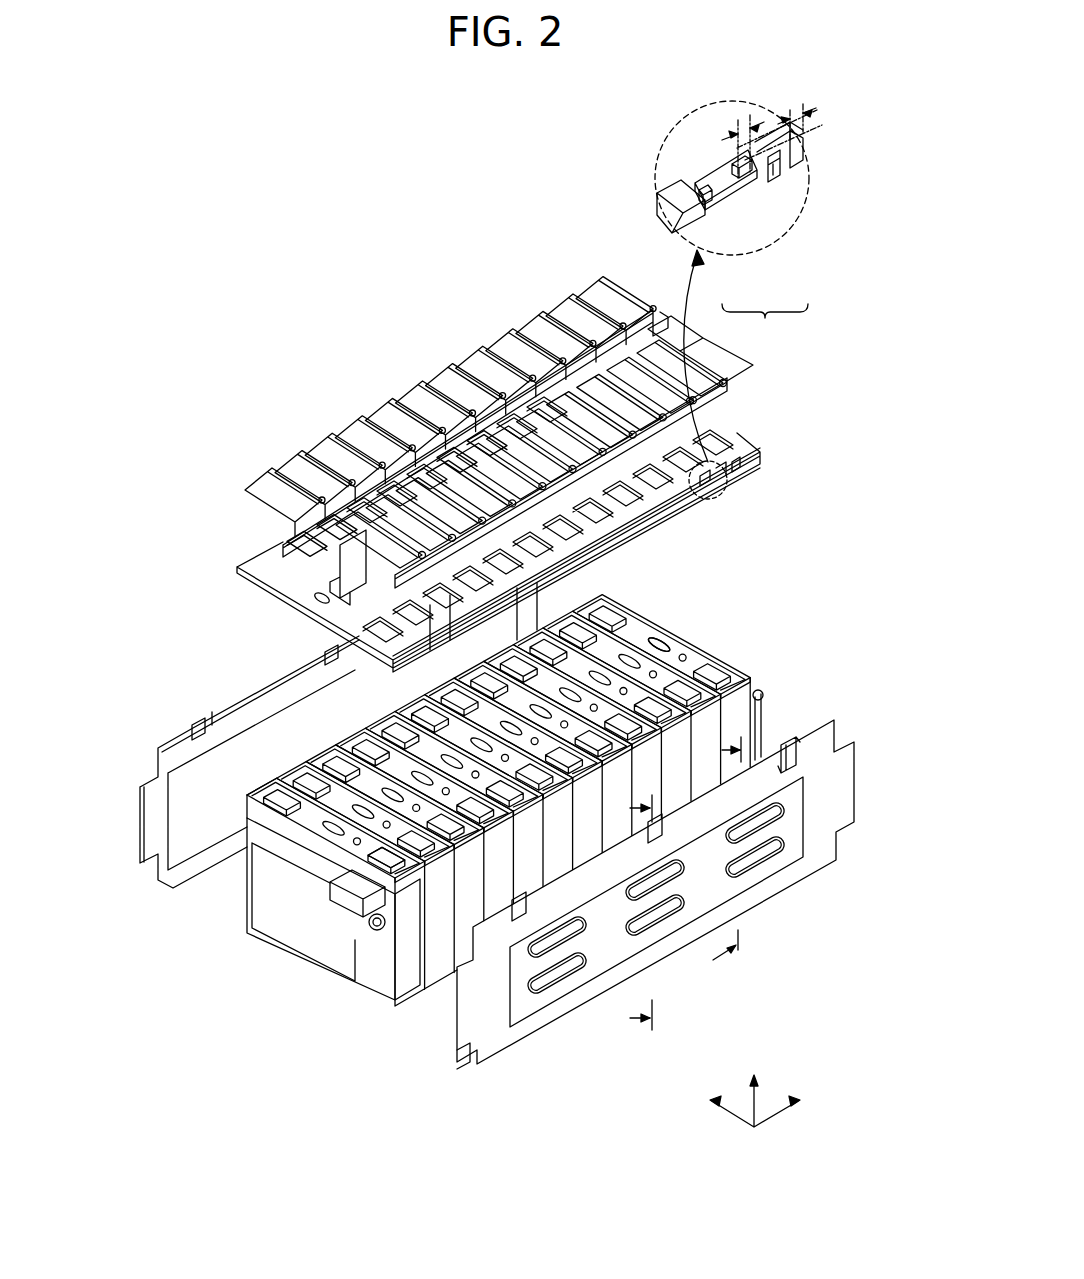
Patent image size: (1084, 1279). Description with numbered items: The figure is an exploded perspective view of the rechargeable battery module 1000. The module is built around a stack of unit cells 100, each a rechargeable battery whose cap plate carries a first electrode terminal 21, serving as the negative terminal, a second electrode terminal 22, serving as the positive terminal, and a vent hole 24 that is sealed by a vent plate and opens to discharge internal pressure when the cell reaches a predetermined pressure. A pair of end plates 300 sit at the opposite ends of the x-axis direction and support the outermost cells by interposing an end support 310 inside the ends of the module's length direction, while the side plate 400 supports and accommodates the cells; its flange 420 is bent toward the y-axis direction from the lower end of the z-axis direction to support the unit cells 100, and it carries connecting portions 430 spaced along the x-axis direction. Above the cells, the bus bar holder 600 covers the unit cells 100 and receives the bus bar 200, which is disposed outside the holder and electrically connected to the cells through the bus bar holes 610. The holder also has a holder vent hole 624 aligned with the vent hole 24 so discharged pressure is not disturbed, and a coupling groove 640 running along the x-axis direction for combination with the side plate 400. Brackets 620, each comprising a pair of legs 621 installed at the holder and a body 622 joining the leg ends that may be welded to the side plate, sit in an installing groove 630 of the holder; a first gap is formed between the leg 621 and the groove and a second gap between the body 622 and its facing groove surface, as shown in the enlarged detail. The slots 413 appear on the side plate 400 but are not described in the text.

The battery module 1000 is at (386, 236).
The bus bar 200 is at (505, 347).
The bus bar holder 600 is at (477, 642).
The bus bar hole 610 is at (610, 520).
The bracket 620 is at (722, 492).
The leg 621 is at (705, 203).
The body 622 is at (740, 180).
The holder vent hole 624 is at (316, 597).
The installing groove 630 is at (757, 172).
The coupling groove 640 is at (742, 466).
The unit cell 100 is at (415, 980).
The first electrode terminal 21 is at (274, 792).
The second electrode terminal 22 is at (390, 868).
The vent hole 24 is at (666, 643).
The end plate 300 is at (302, 922).
The end support 310 is at (300, 868).
The side plate 400 is at (632, 903).
The side plate slots 413 is at (662, 908).
The flange 420 is at (460, 1055).
The connecting portion 430 is at (784, 746).